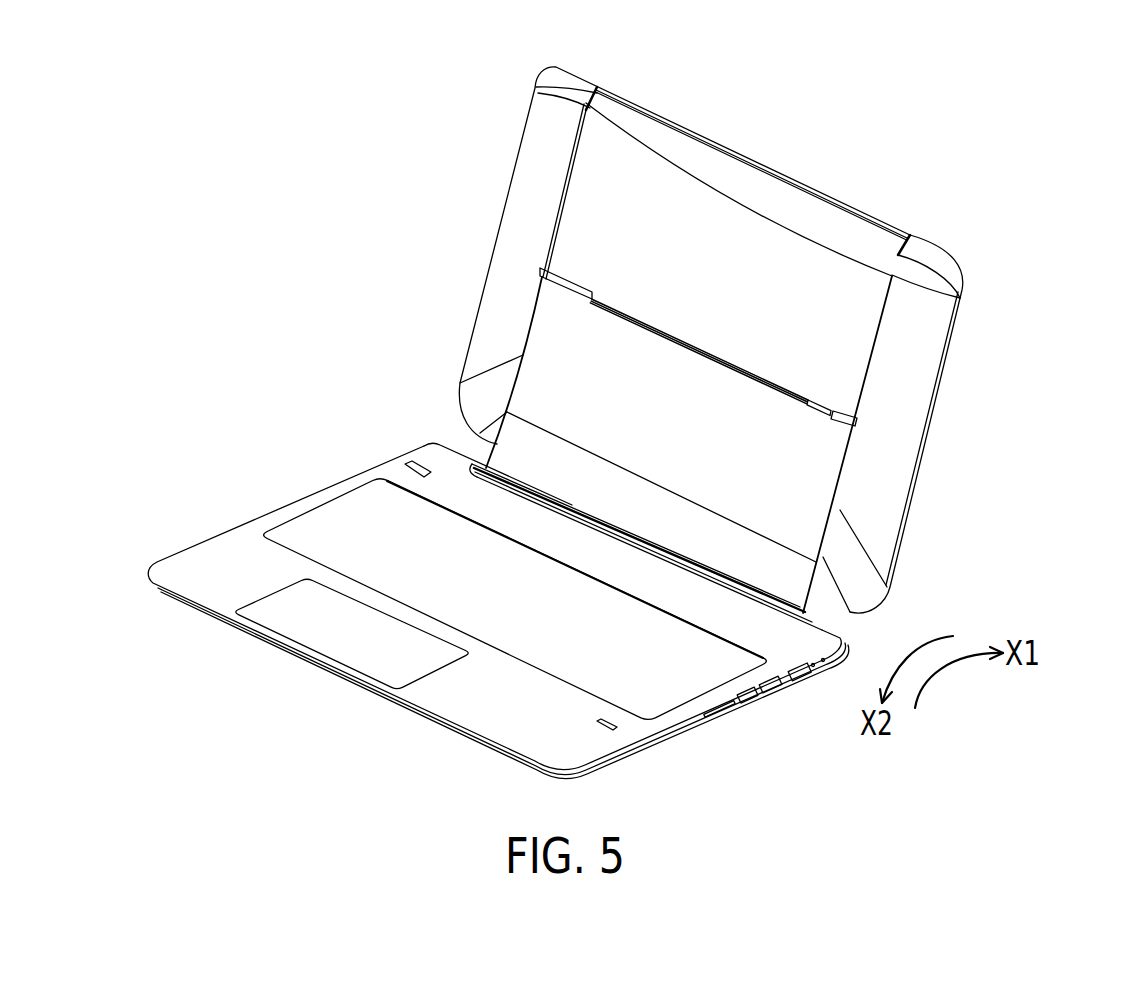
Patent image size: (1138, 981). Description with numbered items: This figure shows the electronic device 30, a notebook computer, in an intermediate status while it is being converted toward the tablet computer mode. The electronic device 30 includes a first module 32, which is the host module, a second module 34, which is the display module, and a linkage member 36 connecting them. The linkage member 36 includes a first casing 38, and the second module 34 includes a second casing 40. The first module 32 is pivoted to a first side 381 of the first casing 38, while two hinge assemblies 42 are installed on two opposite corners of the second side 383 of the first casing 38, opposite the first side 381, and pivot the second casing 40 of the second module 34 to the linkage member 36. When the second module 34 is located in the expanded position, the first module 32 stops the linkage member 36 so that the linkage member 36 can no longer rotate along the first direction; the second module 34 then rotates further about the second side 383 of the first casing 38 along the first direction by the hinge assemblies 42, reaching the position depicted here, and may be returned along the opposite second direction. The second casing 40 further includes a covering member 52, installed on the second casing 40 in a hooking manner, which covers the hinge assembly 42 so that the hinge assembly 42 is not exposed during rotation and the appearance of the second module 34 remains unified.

The electronic device 30 is at (1049, 115).
The first module 32 is at (310, 470).
The second module 34 is at (512, 102).
The linkage member 36 is at (506, 313).
The first casing 38 is at (817, 520).
The second casing 40 is at (947, 330).
The hinge assembly 42 is at (573, 268).
The covering member 52 is at (777, 190).
The first side 381 is at (633, 540).
The second side 383 is at (680, 335).